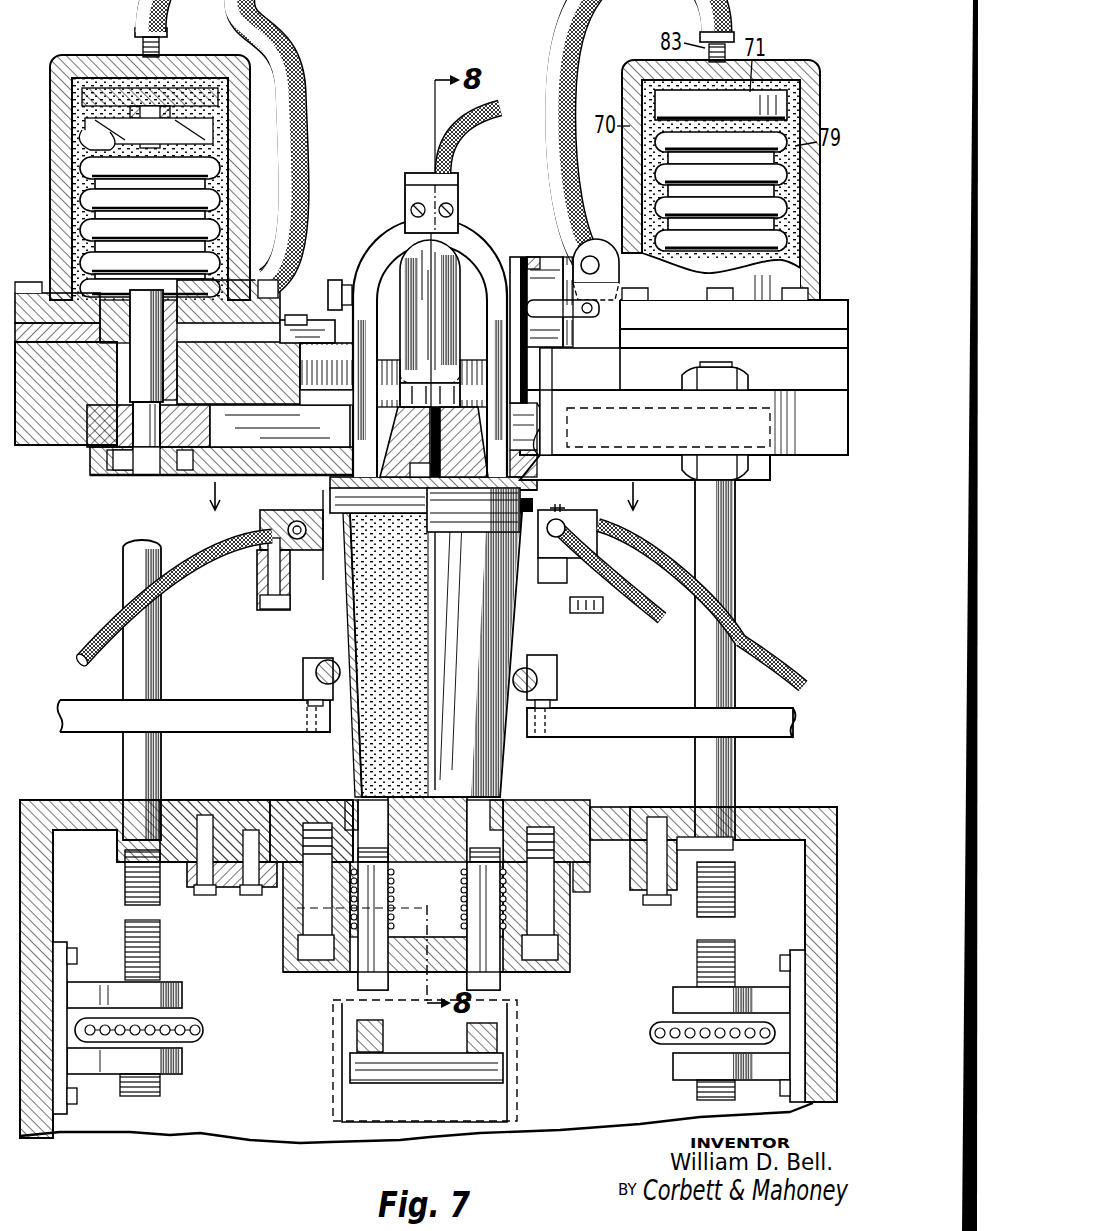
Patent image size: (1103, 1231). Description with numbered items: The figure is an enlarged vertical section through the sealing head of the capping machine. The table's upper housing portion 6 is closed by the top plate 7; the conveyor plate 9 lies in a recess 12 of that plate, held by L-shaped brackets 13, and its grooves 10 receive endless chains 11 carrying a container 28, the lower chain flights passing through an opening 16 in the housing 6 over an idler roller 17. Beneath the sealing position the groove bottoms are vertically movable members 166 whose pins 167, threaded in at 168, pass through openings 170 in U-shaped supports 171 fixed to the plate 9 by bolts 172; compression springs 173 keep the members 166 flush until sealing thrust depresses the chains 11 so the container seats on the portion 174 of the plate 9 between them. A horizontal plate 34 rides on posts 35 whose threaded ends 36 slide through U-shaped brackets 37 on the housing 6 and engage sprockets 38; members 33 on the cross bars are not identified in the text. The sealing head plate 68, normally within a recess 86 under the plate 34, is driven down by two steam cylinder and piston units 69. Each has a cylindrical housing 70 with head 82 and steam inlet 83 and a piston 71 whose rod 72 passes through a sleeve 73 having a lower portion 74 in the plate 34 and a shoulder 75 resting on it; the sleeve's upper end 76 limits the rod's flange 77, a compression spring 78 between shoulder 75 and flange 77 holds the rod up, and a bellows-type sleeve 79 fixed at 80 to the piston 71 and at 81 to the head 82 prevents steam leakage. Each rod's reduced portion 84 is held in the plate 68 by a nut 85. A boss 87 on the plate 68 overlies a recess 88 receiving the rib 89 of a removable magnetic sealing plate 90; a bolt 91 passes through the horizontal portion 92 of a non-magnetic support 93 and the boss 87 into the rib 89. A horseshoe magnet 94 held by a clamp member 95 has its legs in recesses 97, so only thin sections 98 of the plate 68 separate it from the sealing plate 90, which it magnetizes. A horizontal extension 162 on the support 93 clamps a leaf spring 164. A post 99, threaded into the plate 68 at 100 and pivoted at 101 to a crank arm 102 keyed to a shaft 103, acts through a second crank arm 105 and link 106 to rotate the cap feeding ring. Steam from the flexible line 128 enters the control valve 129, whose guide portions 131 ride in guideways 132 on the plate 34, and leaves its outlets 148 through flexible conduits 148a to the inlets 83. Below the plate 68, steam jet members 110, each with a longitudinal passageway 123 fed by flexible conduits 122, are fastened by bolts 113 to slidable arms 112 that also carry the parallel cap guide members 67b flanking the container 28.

The upper housing portion 6 is at (823, 911).
The top plate 7 is at (630, 810).
The longitudinally extending plate 9 is at (270, 815).
The longitudinally extending grooves 10 is at (505, 808).
The chains 11 is at (355, 815).
The recess 12 is at (226, 815).
The L-shaped brackets 13 is at (225, 893).
The opening 16 is at (495, 1096).
The idler roller 17 is at (440, 1075).
The container 28 is at (495, 627).
The guide block 33 is at (318, 672).
The plate 34 is at (823, 434).
The posts 35 is at (138, 677).
The threaded portion 36 is at (123, 871).
The U-shaped bracket 37 is at (130, 993).
The sprocket 38 is at (185, 1040).
The guide members 67b is at (333, 568).
The flat plate 68 is at (205, 475).
The steam cylinder and piston units 69 is at (252, 248).
The cylindrical housing 70 is at (250, 112).
The piston 71 is at (95, 85).
The rod 72 is at (110, 262).
The sleeve 73 is at (80, 180).
The portion 74 is at (62, 296).
The shoulder 75 is at (95, 290).
The upper end 76 is at (72, 123).
The flange 77 is at (118, 100).
The compression spring 78 is at (185, 82).
The bellows-type sleeve 79 is at (237, 166).
The upper end securement of bellows sleeve 80 is at (232, 80).
The lower end securement of bellows sleeve 81 is at (318, 318).
The head 82 is at (275, 282).
The inlet 83 is at (158, 60).
The reduced portion 84 is at (148, 456).
The nut 85 is at (124, 460).
The recess 86 is at (85, 437).
The boss 87 is at (395, 440).
The recess 88 is at (402, 400).
The rib 89 is at (493, 458).
The sealing plate 90 is at (463, 490).
The bolt 91 is at (568, 405).
The horizontal portion 92 is at (447, 420).
The upstanding support 93 is at (440, 298).
The horseshoe magnet 94 is at (455, 236).
The clamp member 95 is at (450, 220).
The recesses 97 is at (536, 467).
The thin section 98 is at (483, 490).
The upstanding post 99 is at (580, 369).
The threaded connection 100 is at (560, 396).
The pivotal connection 101 is at (517, 268).
The crank arm 102 is at (543, 272).
The shaft 103 is at (608, 265).
The crank arm 105 is at (608, 287).
The link 106 is at (603, 312).
The steam jet members 110 is at (262, 517).
The arm 112 is at (568, 572).
The bolts 113 is at (589, 608).
The flexible conduit 122 is at (228, 548).
The longitudinal passageway 123 is at (290, 522).
The flexible steam line 128 is at (480, 118).
The control valve 129 is at (387, 228).
The guide portions 131 is at (335, 358).
The guideways 132 is at (340, 330).
The steam outlets 148 is at (346, 280).
The flexible conduit 148a is at (287, 50).
The horizontal extension 162 is at (422, 177).
The leaf spring 164 is at (414, 186).
The vertically movable members 166 is at (500, 812).
The pin 167 is at (498, 968).
The threaded connection 168 is at (392, 862).
The opening 170 is at (358, 978).
The support 171 is at (295, 973).
The bolts 172 is at (315, 918).
The compression spring 173 is at (520, 903).
The portion 174 is at (445, 865).